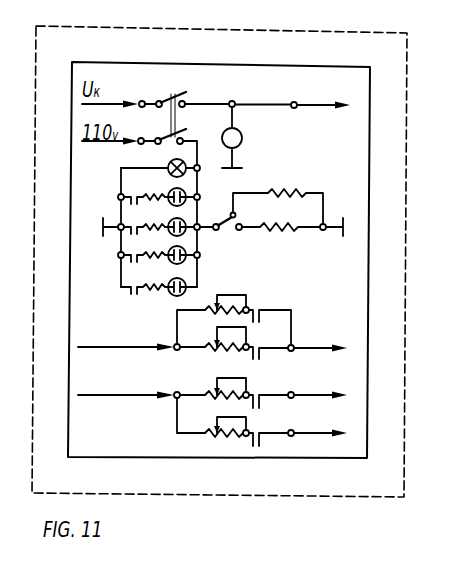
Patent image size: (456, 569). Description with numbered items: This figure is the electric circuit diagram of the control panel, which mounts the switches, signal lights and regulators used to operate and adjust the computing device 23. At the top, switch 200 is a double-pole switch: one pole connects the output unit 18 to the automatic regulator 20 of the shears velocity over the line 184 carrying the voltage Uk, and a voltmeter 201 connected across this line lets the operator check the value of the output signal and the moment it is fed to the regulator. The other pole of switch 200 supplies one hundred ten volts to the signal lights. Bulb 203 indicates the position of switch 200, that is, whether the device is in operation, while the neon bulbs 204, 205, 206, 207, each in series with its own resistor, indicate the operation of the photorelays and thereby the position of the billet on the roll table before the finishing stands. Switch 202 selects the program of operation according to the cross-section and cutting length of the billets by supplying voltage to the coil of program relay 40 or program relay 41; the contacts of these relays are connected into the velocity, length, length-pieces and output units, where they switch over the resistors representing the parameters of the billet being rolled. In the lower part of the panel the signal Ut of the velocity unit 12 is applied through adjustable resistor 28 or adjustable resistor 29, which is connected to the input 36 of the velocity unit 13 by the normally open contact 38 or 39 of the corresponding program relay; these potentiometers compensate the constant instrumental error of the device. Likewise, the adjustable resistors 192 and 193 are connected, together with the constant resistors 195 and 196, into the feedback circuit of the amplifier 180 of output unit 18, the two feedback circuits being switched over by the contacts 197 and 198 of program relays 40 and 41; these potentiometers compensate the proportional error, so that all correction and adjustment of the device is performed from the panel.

The switch 200 is at (159, 109).
The voltmeter 201 is at (248, 137).
The switch 202 is at (221, 234).
The bulb 203 is at (160, 160).
The neon bulb 204 is at (159, 188).
The neon bulb 205 is at (159, 219).
The neon bulb 206 is at (159, 246).
The neon bulb 207 is at (159, 276).
The program relay 40 is at (278, 192).
The program relay 41 is at (292, 240).
The supply voltage output line 184 is at (296, 120).
The automatic regulator 20 is at (340, 120).
The computing device 23 is at (117, 333).
The velocity unit 12 is at (129, 358).
The adjustable resistor 28 is at (227, 290).
The adjustable resistor 29 is at (215, 331).
The normally open contact 38 is at (270, 315).
The normally open contact 39 is at (268, 339).
The input 36 is at (319, 336).
The amplifier 180 is at (129, 382).
The output unit 18 is at (229, 415).
The adjustable resistor 192 is at (213, 378).
The adjustable resistor 193 is at (215, 418).
The contact 197 is at (272, 382).
The contact 198 is at (272, 422).
The constant resistor 195 is at (310, 382).
The constant resistor 196 is at (312, 421).
The velocity unit 13 is at (345, 382).